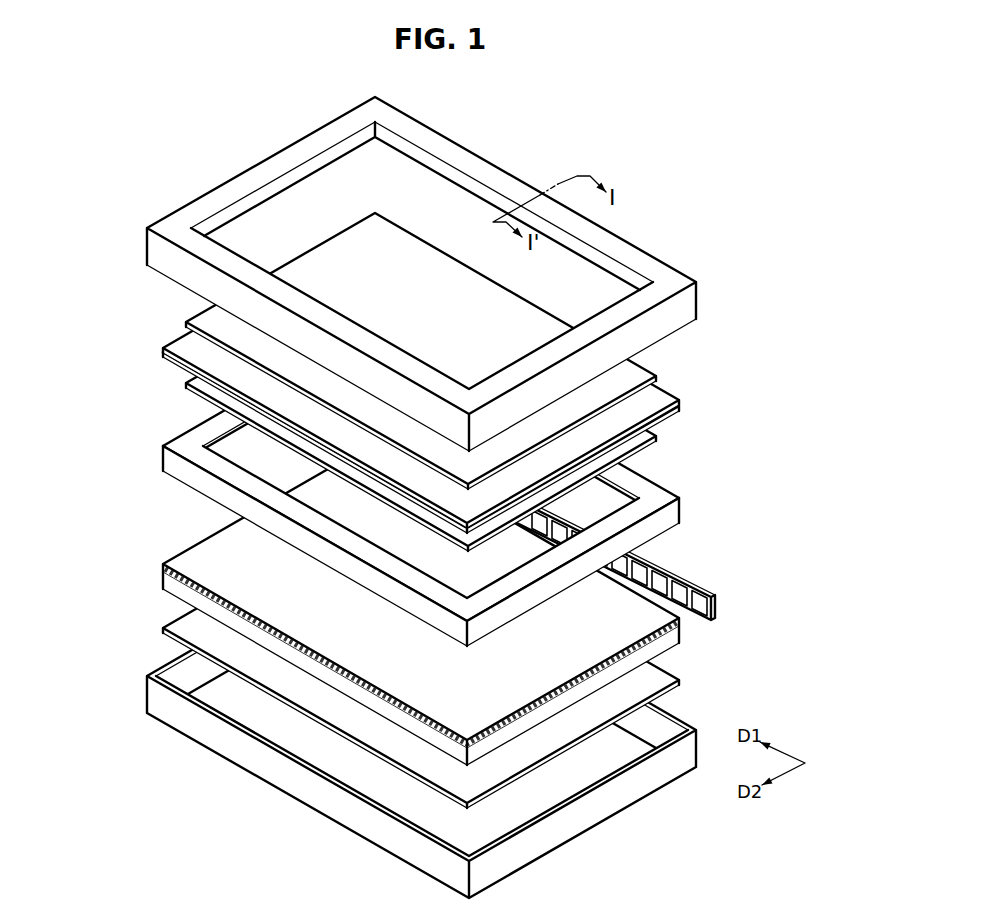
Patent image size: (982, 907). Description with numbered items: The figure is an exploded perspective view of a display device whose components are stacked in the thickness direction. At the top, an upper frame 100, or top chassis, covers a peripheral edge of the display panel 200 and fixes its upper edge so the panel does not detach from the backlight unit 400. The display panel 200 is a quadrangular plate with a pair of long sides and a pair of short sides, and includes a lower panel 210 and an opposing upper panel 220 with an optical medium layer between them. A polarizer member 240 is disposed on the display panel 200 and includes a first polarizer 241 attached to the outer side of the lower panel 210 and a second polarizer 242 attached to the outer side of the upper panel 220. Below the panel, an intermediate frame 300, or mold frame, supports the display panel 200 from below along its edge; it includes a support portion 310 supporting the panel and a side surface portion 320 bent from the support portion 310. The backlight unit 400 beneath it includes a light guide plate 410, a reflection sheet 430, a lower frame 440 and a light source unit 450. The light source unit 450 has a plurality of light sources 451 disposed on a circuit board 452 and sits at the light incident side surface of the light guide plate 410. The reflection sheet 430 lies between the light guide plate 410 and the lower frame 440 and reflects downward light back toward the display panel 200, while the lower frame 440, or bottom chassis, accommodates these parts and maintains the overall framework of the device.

The upper frame 100 is at (690, 304).
The display panel 200 is at (479, 379).
The lower panel 210 is at (666, 421).
The upper panel 220 is at (662, 396).
The polarizer member 240 is at (426, 382).
The first polarizer 241 is at (205, 383).
The second polarizer 242 is at (205, 315).
The intermediate frame 300 is at (479, 484).
The support portion 310 is at (643, 484).
The side surface portion 320 is at (648, 532).
The backlight unit 400 is at (442, 670).
The light guide plate 410 is at (172, 546).
The reflection sheet 430 is at (185, 622).
The lower frame 440 is at (185, 665).
The light source unit 450 is at (670, 567).
The light source 451 is at (698, 607).
The circuit board 452 is at (700, 590).